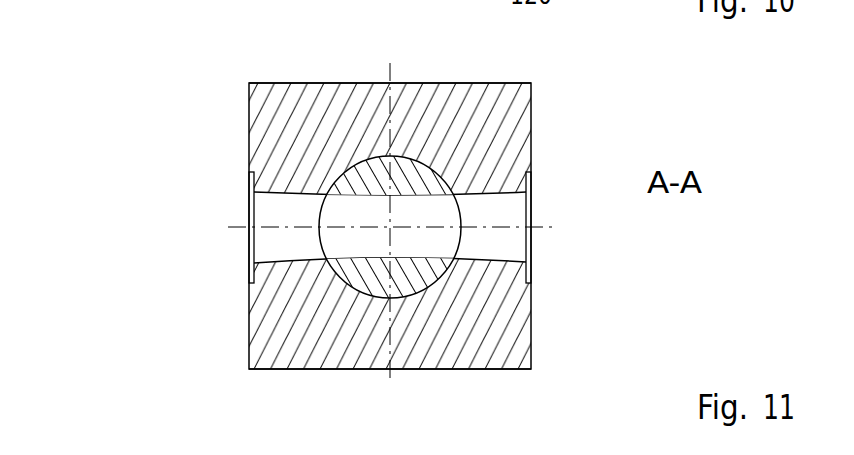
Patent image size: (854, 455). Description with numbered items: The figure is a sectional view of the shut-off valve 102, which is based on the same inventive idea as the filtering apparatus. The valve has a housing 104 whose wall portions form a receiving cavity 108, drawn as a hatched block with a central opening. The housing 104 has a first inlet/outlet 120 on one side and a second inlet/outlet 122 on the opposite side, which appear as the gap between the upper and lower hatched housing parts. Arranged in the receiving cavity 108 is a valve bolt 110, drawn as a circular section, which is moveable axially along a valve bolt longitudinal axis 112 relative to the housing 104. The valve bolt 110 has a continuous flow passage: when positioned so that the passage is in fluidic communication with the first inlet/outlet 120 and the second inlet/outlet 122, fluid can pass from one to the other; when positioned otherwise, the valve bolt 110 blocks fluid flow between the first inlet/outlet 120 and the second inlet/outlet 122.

The shut-off valve 102 is at (141, 76).
The housing 104 is at (493, 112).
The receiving cavity 108 is at (440, 277).
The valve bolt 110 is at (363, 179).
The valve bolt longitudinal axis 112 is at (352, 267).
The first inlet/outlet 120 is at (280, 207).
The second inlet/outlet 122 is at (512, 245).